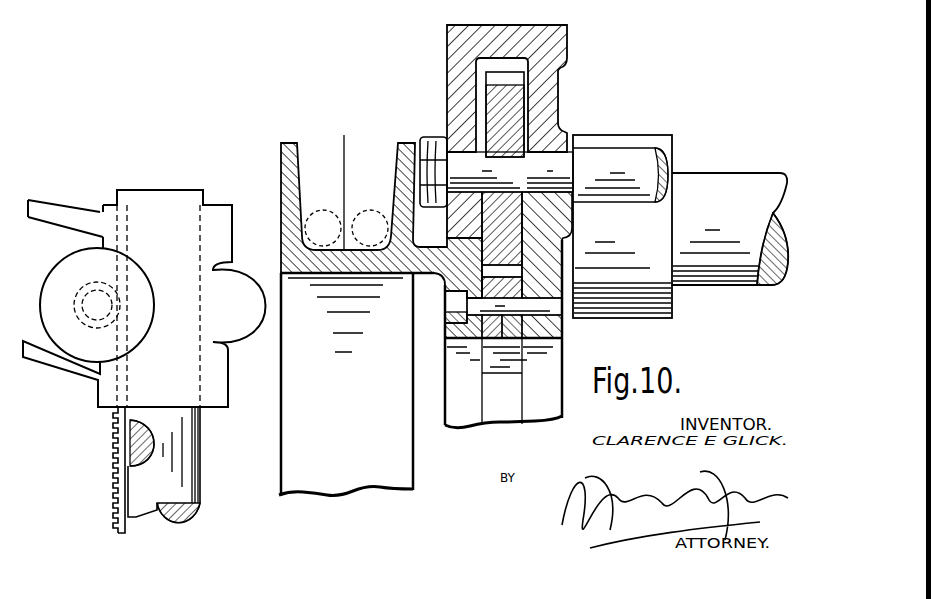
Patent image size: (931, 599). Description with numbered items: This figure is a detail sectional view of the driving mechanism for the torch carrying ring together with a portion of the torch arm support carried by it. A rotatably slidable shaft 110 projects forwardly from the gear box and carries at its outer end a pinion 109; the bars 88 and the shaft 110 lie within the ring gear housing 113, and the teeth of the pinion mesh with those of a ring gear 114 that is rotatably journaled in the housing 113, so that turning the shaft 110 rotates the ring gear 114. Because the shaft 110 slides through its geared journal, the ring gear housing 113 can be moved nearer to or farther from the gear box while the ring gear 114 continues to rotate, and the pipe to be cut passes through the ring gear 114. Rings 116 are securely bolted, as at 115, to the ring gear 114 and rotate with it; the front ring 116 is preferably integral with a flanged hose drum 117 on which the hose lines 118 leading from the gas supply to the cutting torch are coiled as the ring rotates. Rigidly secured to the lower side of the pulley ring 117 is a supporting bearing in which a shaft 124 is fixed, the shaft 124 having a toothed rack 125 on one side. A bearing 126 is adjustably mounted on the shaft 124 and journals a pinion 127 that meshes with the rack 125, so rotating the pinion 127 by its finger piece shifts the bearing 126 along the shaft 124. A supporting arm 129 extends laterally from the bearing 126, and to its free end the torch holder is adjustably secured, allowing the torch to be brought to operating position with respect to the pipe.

The bars 88 is at (717, 190).
The pinion 109 is at (508, 103).
The rotatably slidable shaft 110 is at (627, 160).
The ring gear housing 113 is at (552, 118).
The ring gear 114 is at (468, 291).
The bolts 115 is at (562, 312).
The rings 116 is at (527, 325).
The flanged hose drum 117 is at (351, 174).
The hose lines 118 is at (318, 210).
The shaft 124 is at (157, 482).
The toothed rack 125 is at (125, 440).
The bearing 126 is at (210, 220).
The pinion 127 is at (80, 288).
The supporting arm 129 is at (57, 218).